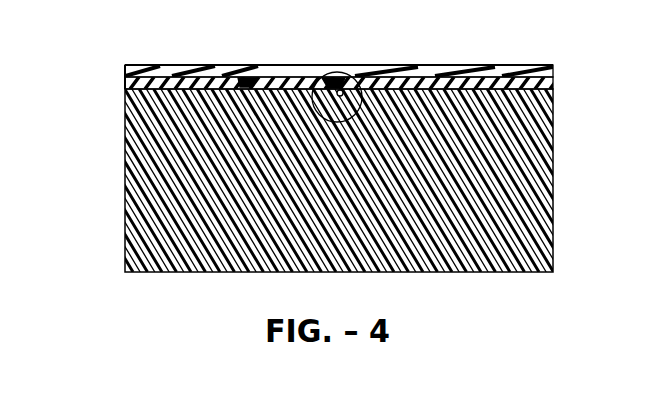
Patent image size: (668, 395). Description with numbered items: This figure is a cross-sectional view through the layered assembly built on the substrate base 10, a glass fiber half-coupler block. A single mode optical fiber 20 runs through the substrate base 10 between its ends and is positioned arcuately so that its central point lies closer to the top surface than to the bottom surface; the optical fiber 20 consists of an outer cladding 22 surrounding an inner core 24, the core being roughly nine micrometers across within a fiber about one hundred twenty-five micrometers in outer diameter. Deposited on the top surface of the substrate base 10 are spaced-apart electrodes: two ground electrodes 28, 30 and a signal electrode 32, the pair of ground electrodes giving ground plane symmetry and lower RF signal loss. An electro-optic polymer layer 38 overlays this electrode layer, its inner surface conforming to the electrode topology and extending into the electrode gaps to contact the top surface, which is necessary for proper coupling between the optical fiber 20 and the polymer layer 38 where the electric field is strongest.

The substrate base 10 is at (555, 222).
The single mode optical fiber 20 is at (319, 127).
The outer cladding 22 is at (330, 98).
The inner core 24 is at (333, 78).
The ground electrode 28 is at (553, 85).
The ground electrode 30 is at (127, 82).
The signal electrode 32 is at (283, 76).
The electro-optic polymer layer 38 is at (545, 65).